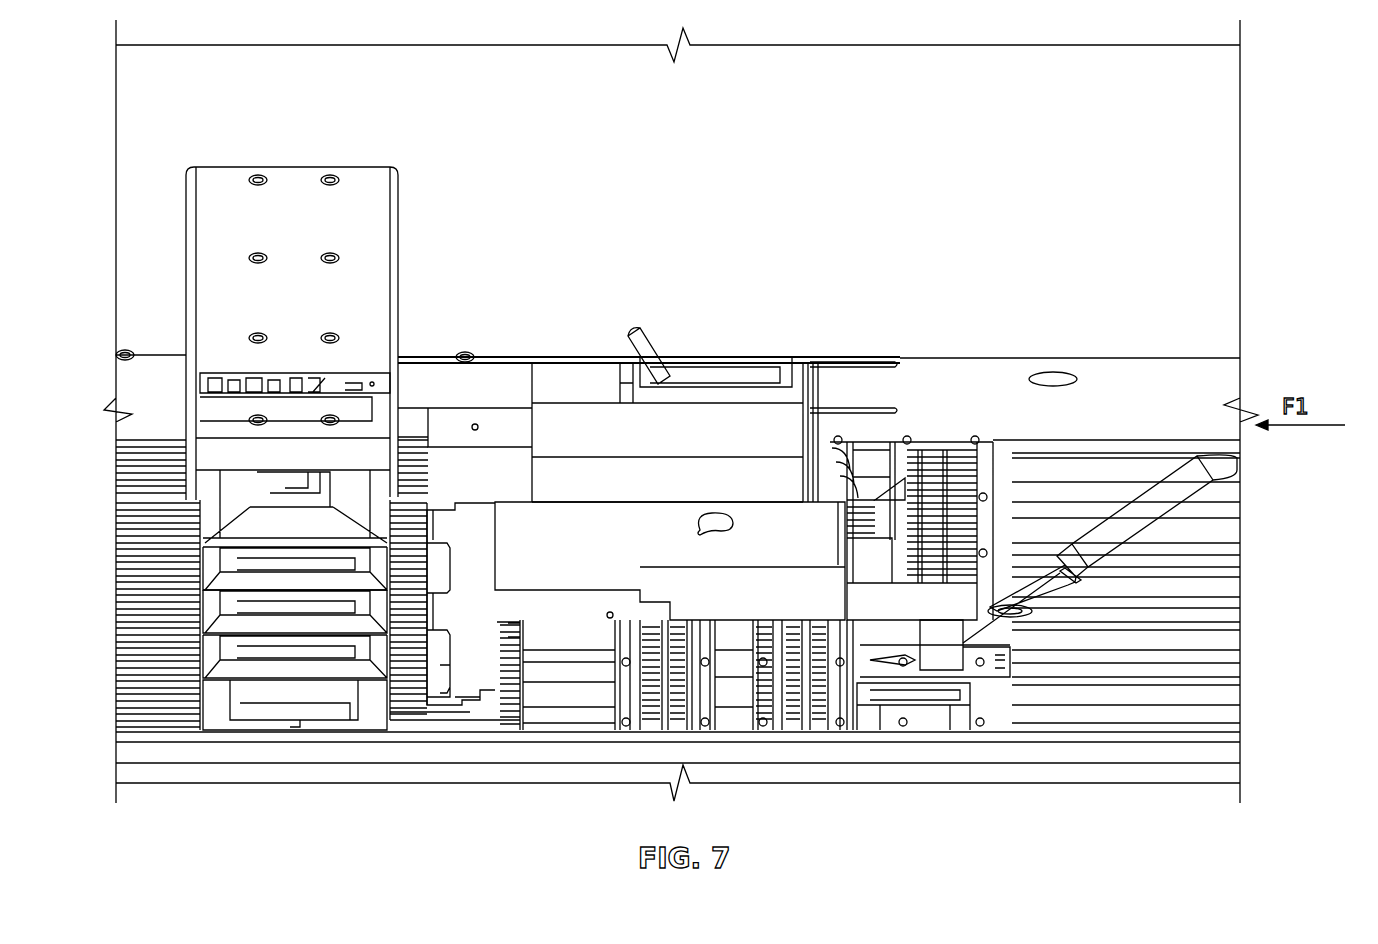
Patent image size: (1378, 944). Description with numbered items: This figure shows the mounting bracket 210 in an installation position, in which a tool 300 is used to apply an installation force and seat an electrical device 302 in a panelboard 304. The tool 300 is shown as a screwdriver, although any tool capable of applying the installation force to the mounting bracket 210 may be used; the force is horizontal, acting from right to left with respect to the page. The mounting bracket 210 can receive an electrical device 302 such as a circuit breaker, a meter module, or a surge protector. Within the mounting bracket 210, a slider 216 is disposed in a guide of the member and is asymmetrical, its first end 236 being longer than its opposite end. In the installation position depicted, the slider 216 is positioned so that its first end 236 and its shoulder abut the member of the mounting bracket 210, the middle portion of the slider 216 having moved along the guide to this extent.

The electrical device 302 is at (590, 562).
The panelboard 304 is at (372, 762).
The slider 216 is at (931, 602).
The tool 300 is at (1147, 513).
The mounting bracket 210 is at (1007, 683).
The first end 236 is at (1025, 620).